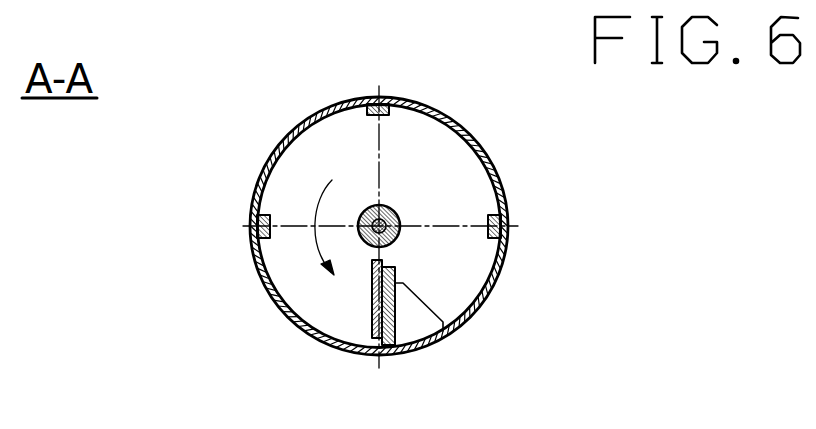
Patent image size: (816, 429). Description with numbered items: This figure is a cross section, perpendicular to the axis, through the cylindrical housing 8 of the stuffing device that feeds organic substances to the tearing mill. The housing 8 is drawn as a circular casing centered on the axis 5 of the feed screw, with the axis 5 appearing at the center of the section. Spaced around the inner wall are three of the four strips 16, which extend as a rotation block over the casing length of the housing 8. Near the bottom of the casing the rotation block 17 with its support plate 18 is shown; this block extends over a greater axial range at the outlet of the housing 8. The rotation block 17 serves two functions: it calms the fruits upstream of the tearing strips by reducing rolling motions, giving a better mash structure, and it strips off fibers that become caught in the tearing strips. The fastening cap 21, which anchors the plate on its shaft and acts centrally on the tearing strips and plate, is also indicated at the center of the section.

The axis 5 is at (402, 218).
The cylindrical housing 8 is at (485, 146).
The strips 16 is at (373, 101).
The rotation block 17 is at (372, 325).
The support plate 18 is at (396, 325).
The fastening cap 21 is at (393, 243).